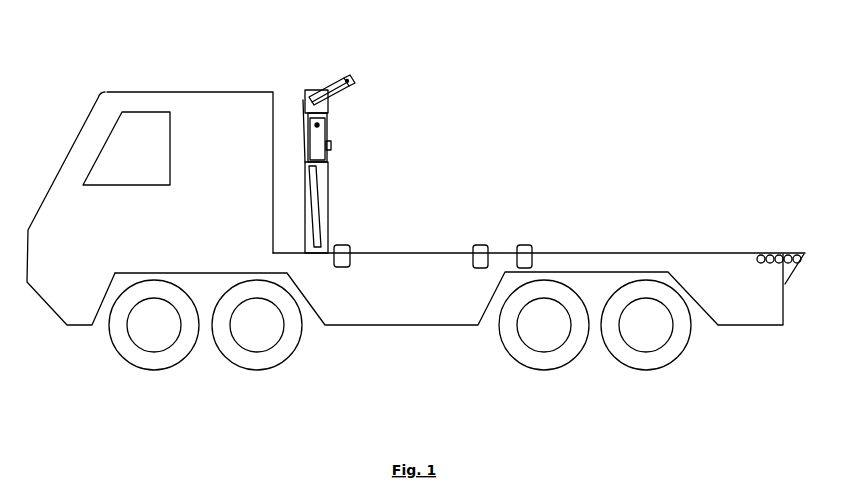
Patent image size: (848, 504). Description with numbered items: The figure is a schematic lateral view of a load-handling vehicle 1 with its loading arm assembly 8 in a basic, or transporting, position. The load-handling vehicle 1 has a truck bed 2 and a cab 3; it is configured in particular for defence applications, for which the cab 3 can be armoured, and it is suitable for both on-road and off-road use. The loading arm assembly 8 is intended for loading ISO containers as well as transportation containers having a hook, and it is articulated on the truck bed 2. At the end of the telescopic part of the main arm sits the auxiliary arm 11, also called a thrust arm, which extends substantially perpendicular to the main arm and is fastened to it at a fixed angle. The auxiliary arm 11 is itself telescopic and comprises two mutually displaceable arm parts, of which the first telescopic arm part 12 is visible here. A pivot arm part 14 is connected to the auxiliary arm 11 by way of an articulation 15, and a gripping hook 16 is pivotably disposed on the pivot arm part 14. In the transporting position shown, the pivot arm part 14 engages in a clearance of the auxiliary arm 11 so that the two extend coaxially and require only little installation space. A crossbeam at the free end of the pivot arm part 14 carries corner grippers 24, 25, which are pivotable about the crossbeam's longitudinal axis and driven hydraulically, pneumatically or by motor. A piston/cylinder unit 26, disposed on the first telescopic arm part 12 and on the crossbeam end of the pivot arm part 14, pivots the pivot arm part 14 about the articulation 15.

The load-handling vehicle 1 is at (416, 224).
The truck bed 2 is at (458, 233).
The cab 3 is at (208, 80).
The loading arm assembly 8 is at (421, 141).
The auxiliary arm 11 is at (421, 141).
The first telescopic arm part 12 is at (320, 187).
The pivot arm part 14 is at (321, 138).
The articulation 15 is at (320, 123).
The gripping hook 16 is at (331, 147).
The corner gripper 24 is at (340, 80).
The corner gripper 25 is at (371, 56).
The piston/cylinder unit 26 is at (318, 222).